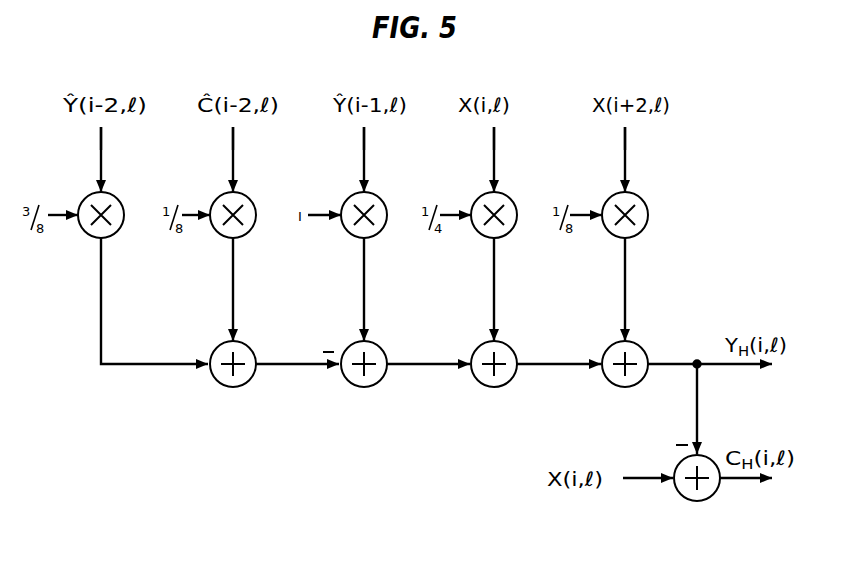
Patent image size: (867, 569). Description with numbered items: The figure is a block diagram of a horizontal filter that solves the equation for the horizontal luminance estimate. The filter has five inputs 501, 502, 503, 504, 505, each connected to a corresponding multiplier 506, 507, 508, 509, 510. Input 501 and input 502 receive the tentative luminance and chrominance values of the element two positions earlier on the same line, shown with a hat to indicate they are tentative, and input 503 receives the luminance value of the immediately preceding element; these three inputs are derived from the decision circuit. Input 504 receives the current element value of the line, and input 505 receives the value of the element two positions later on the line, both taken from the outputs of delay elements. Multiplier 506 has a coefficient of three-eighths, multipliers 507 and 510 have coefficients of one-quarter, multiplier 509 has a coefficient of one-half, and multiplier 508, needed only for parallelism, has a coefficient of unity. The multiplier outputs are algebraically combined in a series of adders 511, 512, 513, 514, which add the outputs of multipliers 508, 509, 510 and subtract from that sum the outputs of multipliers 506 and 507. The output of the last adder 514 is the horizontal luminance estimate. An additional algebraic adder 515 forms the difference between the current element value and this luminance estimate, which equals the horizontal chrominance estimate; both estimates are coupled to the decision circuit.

The input 501 is at (103, 164).
The input 502 is at (235, 164).
The input 503 is at (366, 164).
The input 504 is at (496, 164).
The input 505 is at (627, 164).
The multiplier 506 is at (93, 237).
The multiplier 507 is at (225, 237).
The multiplier 508 is at (356, 237).
The multiplier 509 is at (486, 237).
The multiplier 510 is at (617, 237).
The adder 511 is at (233, 388).
The adder 512 is at (364, 388).
The adder 513 is at (494, 388).
The adder 514 is at (625, 388).
The algebraic adder 515 is at (697, 502).